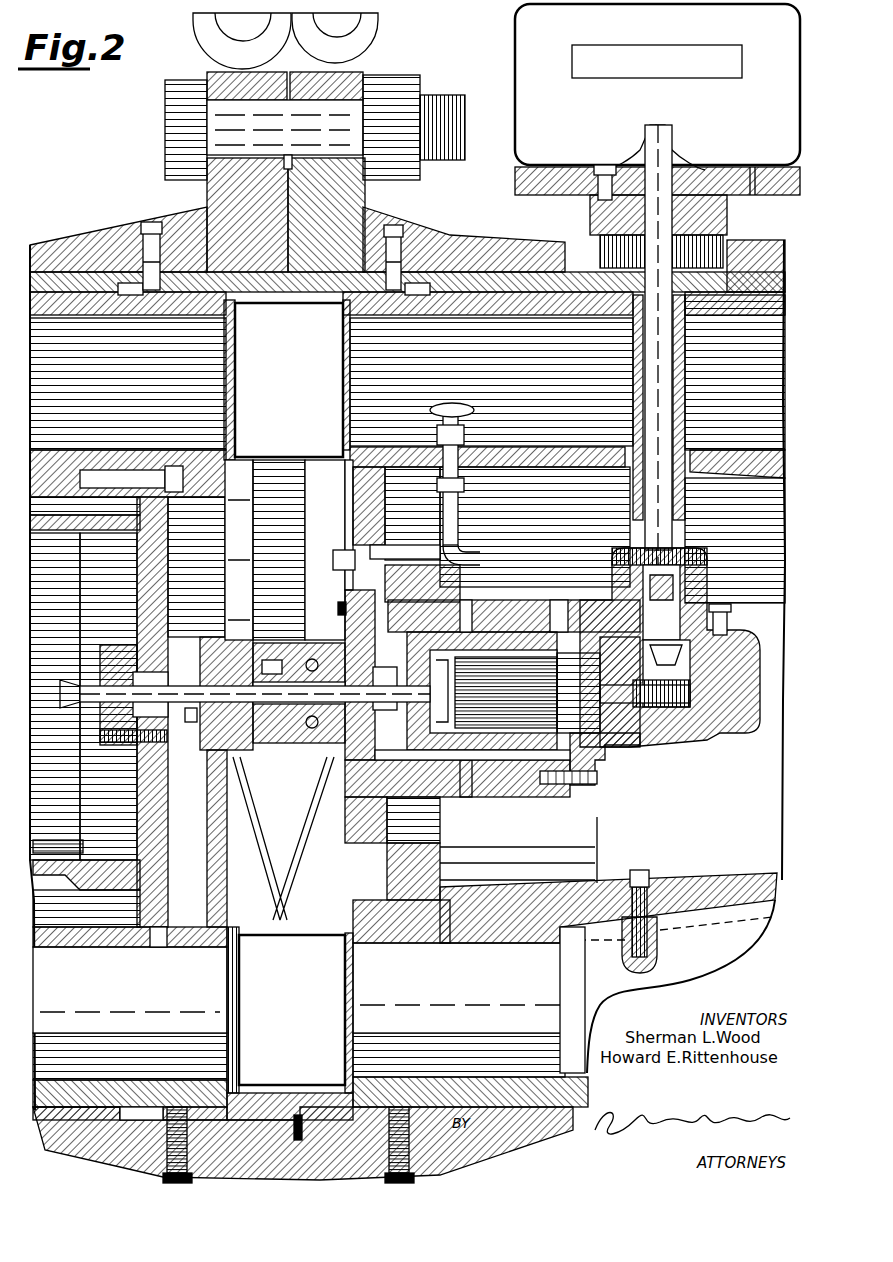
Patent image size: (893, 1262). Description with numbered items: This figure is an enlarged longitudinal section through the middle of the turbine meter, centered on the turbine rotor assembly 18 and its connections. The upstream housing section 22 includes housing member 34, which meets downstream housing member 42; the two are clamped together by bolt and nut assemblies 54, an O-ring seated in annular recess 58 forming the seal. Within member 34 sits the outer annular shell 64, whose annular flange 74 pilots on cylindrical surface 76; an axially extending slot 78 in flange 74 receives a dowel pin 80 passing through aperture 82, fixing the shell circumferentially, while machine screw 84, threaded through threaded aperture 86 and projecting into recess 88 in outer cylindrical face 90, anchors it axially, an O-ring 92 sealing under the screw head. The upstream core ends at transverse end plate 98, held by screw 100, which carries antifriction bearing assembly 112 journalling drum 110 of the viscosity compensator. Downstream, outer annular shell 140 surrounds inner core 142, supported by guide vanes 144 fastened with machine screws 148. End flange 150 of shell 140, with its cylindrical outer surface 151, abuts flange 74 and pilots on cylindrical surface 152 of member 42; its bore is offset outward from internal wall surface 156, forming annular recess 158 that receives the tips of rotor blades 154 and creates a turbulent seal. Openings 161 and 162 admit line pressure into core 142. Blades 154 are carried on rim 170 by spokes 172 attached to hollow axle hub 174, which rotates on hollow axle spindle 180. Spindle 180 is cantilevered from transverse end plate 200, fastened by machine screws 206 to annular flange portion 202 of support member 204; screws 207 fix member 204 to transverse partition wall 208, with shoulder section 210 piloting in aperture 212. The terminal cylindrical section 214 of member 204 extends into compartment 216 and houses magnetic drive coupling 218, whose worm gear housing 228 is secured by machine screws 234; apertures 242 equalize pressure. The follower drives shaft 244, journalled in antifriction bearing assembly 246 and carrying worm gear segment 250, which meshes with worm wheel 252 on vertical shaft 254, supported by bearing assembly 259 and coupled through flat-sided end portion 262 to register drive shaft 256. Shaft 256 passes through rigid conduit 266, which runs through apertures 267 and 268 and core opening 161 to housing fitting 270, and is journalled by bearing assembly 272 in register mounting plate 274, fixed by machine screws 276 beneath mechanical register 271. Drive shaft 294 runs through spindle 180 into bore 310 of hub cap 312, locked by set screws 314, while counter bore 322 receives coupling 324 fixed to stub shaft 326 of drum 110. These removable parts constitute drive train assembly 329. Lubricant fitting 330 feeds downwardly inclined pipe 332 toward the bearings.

The turbine rotor assembly 18 is at (248, 966).
The housing section 22 is at (72, 232).
The housing section member 34 is at (110, 243).
The housing section member 42 is at (528, 1130).
The bolt and nut assemblies 54 is at (178, 117).
The annular recess 58 is at (303, 1120).
The outer annular shell 64 is at (83, 305).
The annular flange 74 is at (228, 272).
The cylindrical surface 76 is at (212, 270).
The axially extending slot 78 is at (128, 284).
The dowel pin 80 is at (162, 245).
The aperture 82 is at (161, 262).
The machine screw 84 is at (172, 1150).
The threaded aperture 86 is at (166, 1128).
The radially extending recess 88 is at (183, 1080).
The radially outer cylindrical face 90 is at (220, 1128).
The O-ring 92 is at (192, 1170).
The transverse end plate 98 is at (170, 585).
The screw 100 is at (165, 468).
The drum 110 is at (78, 568).
The antifriction bearing assembly 112 is at (116, 650).
The outer annular shell 140 is at (643, 875).
The inner core 142 is at (465, 935).
The guide vanes 144 is at (567, 983).
The machine screws 148 is at (478, 298).
The end flange 150 is at (313, 272).
The cylindrical outer surface 151 is at (303, 1128).
The cylindrical surface 152 is at (338, 278).
The rotor blades 154 is at (345, 390).
The internal cylindrical peripheral wall surface 156 is at (537, 295).
The annular recess 158 is at (290, 304).
The opening 161 is at (693, 460).
The opening 162 is at (418, 465).
The rim 170 is at (306, 490).
The spokes 172 is at (295, 827).
The hollow axle hub 174 is at (275, 645).
The hollow axle spindle 180 is at (272, 725).
The transverse end plate 200 is at (385, 620).
The annular flange portion 202 is at (342, 550).
The support member 204 is at (490, 575).
The machine screws 206 is at (340, 604).
The screws 207 is at (340, 556).
The transverse partition wall 208 is at (462, 485).
The intermediate shoulder section 210 is at (459, 540).
The aperture 212 is at (468, 792).
The terminal cylindrical section 214 is at (522, 600).
The compartment 216 is at (560, 468).
The magnetic drive coupling 218 is at (562, 600).
The worm gear housing 228 is at (737, 741).
The machine screws 234 is at (600, 779).
The apertures 242 is at (470, 600).
The shaft 244 is at (560, 696).
The antifriction bearing assembly 246 is at (635, 742).
The worm gear segment 250 is at (685, 745).
The worm wheel 252 is at (692, 692).
The vertically extending shaft 254 is at (686, 650).
The register drive shaft 256 is at (590, 200).
The antifriction bearing assembly 259 is at (728, 632).
The end portion 262 is at (690, 606).
The rigid conduit 266 is at (686, 392).
The aperture 267 is at (632, 328).
The aperture 268 is at (708, 272).
The housing fitting 270 is at (728, 222).
The mechanical register 271 is at (530, 33).
The antifriction bearing assembly 272 is at (666, 150).
The register mounting plate 274 is at (767, 168).
The machine screws 276 is at (605, 165).
The drive shaft 294 is at (300, 725).
The bore 310 is at (205, 648).
The hub cap member 312 is at (216, 761).
The set screws 314 is at (191, 722).
The counter bore 322 is at (165, 672).
The coupling 324 is at (130, 742).
The stub shaft 326 is at (80, 698).
The drive train assembly 329 is at (553, 801).
The lubricant fitting 330 is at (462, 406).
The downwardly inclined pipe 332 is at (466, 433).